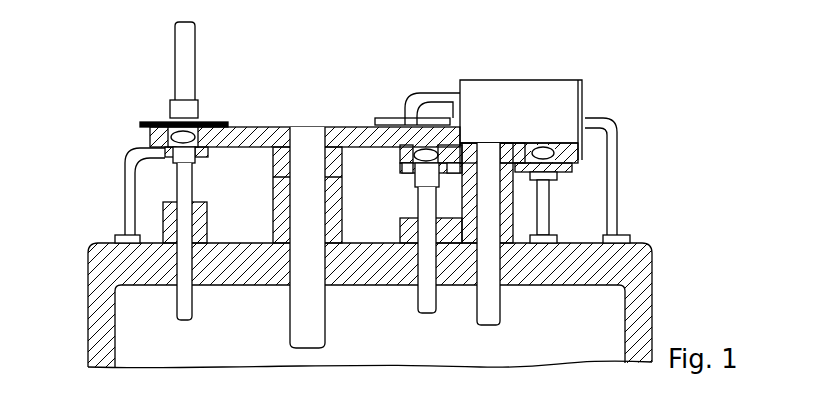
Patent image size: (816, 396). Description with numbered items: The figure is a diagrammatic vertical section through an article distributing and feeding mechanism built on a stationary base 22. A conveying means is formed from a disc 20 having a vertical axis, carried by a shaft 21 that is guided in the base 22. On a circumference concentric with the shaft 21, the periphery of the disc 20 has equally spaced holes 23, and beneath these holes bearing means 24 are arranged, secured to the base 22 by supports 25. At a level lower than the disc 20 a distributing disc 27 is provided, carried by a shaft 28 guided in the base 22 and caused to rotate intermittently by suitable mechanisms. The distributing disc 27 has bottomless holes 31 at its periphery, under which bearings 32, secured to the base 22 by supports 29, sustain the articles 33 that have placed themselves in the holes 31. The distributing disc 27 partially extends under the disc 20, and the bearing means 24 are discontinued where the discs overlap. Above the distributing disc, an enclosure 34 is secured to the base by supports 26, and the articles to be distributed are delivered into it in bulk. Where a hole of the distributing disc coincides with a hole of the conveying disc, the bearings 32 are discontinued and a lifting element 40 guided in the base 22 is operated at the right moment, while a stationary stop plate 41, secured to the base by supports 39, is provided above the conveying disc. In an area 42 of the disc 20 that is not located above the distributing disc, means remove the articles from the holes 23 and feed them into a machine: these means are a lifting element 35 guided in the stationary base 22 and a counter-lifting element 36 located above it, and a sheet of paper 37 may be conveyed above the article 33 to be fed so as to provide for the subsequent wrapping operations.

The disc 20 is at (233, 125).
The shaft 21 is at (303, 307).
The stationary base 22 is at (157, 275).
The holes 23 is at (427, 136).
The bearing means 24 is at (208, 158).
The supports 25 is at (126, 192).
The supports 26 is at (613, 165).
The distributing disc 27 is at (514, 160).
The shaft 28 is at (488, 307).
The supports 29 is at (547, 197).
The bottomless holes 31 is at (536, 138).
The bearings 32 is at (570, 168).
The articles 33 is at (172, 138).
The enclosure 34 is at (482, 107).
The lifting element 35 is at (185, 299).
The counter-lifting element 36 is at (188, 38).
The sheet of paper 37 is at (142, 122).
The supports 39 is at (430, 97).
The lifting element 40 is at (428, 290).
The stationary stop plate 41 is at (404, 122).
The area 42 is at (207, 100).